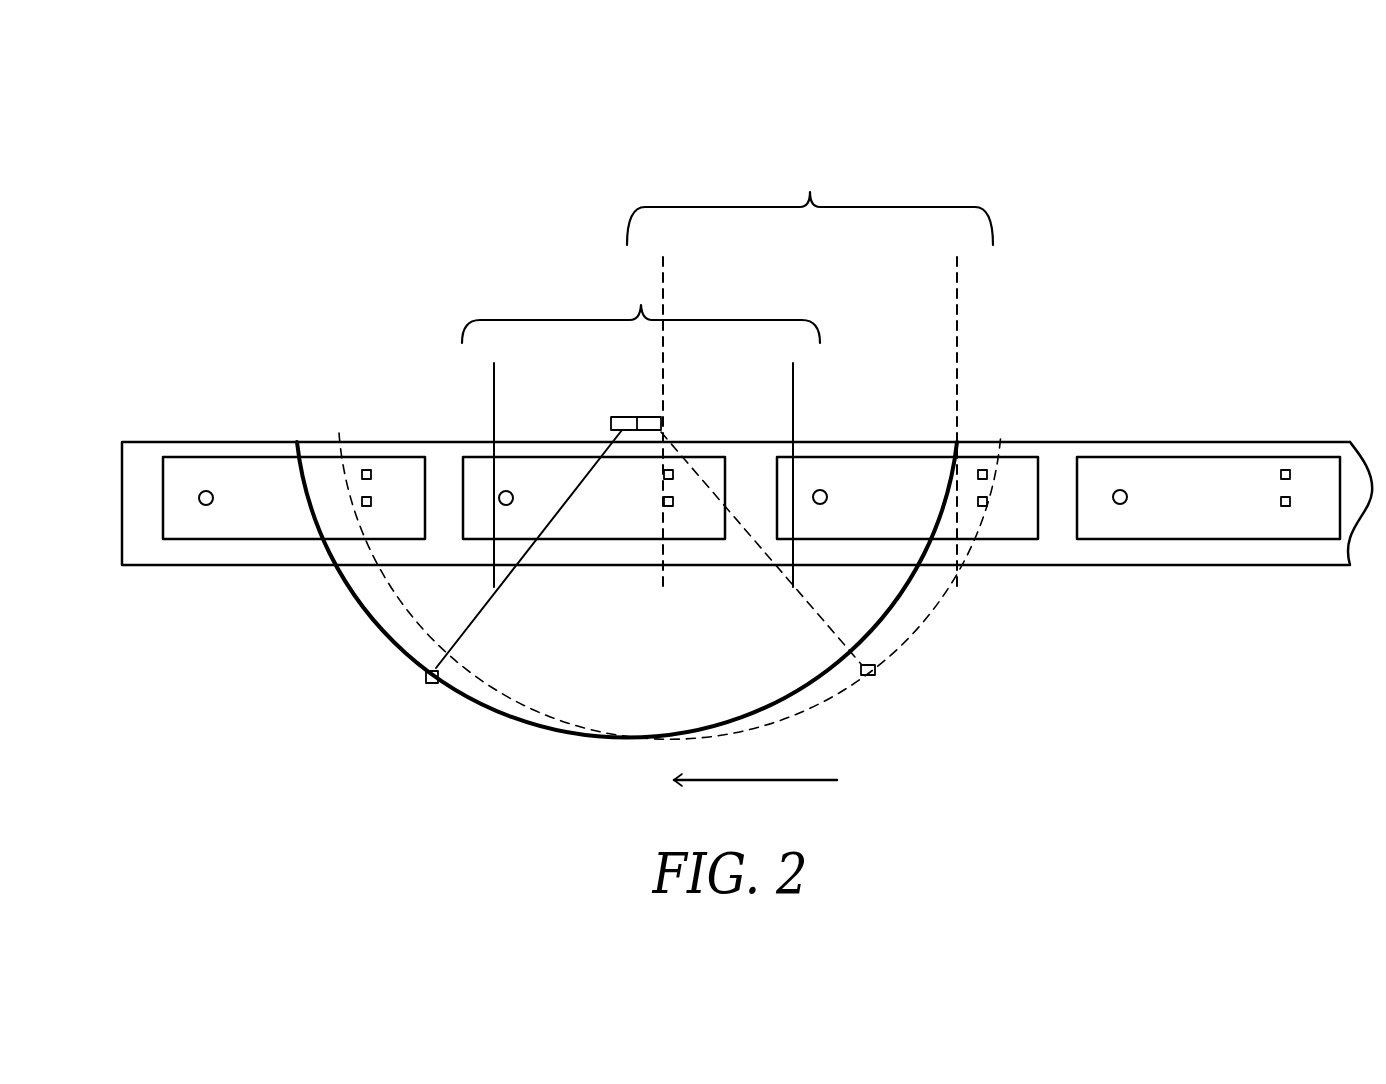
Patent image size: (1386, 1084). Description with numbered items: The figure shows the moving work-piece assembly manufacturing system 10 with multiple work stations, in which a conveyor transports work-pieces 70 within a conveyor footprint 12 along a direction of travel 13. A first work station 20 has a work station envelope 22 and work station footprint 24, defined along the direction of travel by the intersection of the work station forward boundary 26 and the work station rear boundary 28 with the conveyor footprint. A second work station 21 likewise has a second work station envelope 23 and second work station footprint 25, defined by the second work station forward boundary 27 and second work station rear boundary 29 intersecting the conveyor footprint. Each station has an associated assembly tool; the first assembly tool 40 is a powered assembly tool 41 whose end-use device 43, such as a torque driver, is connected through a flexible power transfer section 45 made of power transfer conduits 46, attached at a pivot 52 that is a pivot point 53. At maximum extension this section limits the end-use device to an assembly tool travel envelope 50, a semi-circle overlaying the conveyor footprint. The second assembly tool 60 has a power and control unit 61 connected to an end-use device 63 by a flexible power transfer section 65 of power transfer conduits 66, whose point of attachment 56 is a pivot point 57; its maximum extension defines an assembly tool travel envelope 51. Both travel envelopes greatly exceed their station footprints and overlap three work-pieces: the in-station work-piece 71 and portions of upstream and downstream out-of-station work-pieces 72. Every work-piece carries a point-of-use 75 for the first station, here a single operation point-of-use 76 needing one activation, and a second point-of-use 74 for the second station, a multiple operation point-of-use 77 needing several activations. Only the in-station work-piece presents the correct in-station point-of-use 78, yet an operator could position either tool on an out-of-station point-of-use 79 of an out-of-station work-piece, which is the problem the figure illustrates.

The moving work-piece assembly manufacturing system 10 is at (747, 371).
The conveyor footprint 12 is at (1220, 428).
The direction of travel 13 is at (767, 782).
The work station 20 is at (641, 287).
The second work station 21 is at (810, 168).
The work station envelope 22 is at (641, 287).
The second work station envelope 23 is at (810, 168).
The work station footprint 24 is at (508, 288).
The second work station footprint 25 is at (754, 126).
The work station forward boundary 26 is at (793, 384).
The second work station forward boundary 27 is at (957, 323).
The work station rear boundary 28 is at (494, 398).
The second work station rear boundary 29 is at (667, 372).
The assembly tool 40 is at (642, 377).
The powered assembly tool 41 is at (642, 377).
The end-use device 43 is at (418, 677).
The flexible power transfer section 45 is at (529, 549).
The power transfer conduit 46 is at (484, 612).
The assembly tool travel envelope 50 is at (507, 720).
The assembly tool travel envelope 51 is at (906, 707).
The pivot 52 is at (642, 377).
The pivot point 53 is at (642, 377).
The point of attachment 56 is at (642, 377).
The pivot point 57 is at (642, 377).
The second assembly tool 60 is at (642, 377).
The power and control unit 61 is at (615, 408).
The end-use device 63 is at (888, 661).
The flexible power transfer section 65 is at (761, 567).
The power transfer conduit 66 is at (832, 628).
The work-piece 70 is at (748, 537).
The in-station work-piece 71 is at (640, 543).
The out-of-station work-piece 72 is at (267, 543).
The second point-of-use 74 is at (827, 498).
The point-of-use 75 is at (762, 519).
The single operation point-of-use 76 is at (762, 519).
The multiple operation point-of-use 77 is at (360, 497).
The in-station point-of-use 78 is at (500, 502).
The out-of-station point-of-use 79 is at (207, 491).